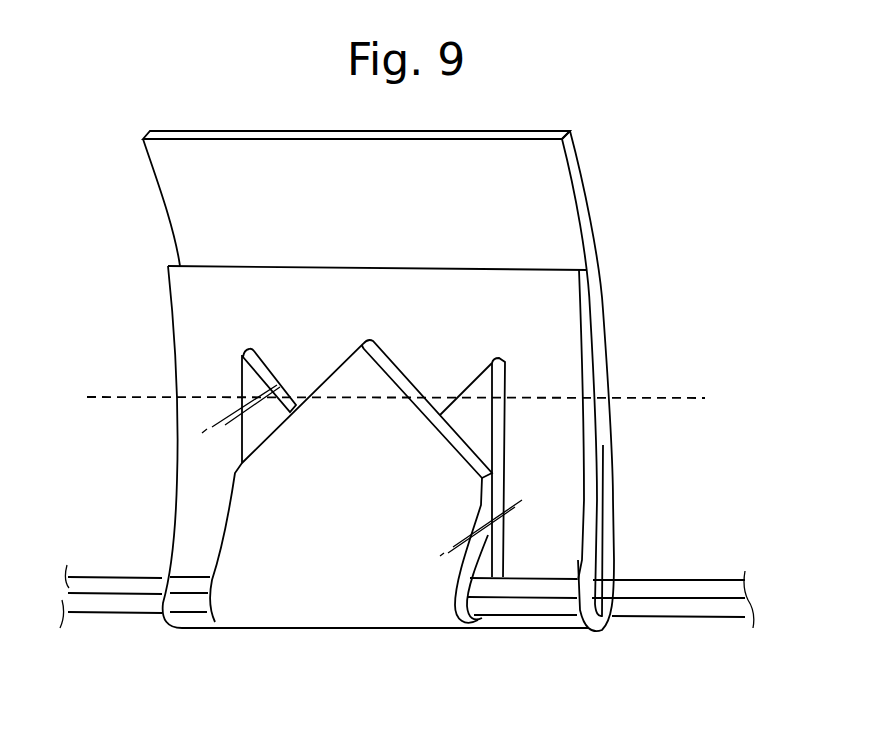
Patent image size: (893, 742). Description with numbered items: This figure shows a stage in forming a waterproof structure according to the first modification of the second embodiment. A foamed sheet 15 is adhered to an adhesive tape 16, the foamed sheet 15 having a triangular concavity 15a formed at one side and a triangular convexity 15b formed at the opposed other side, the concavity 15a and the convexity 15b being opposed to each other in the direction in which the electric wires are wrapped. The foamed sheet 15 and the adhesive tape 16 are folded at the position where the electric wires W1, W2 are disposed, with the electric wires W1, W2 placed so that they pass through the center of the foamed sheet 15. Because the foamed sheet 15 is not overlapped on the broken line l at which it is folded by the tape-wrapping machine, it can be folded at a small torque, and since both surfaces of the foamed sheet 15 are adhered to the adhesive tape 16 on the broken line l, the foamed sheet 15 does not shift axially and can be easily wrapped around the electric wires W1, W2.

The adhesive tape 16 is at (553, 207).
The foamed sheet 15 is at (275, 605).
The triangular concavity 15a is at (268, 358).
The triangular convexity 15b is at (400, 371).
The electric wire W1 is at (111, 583).
The electric wire W2 is at (124, 603).
The broken line l is at (403, 400).